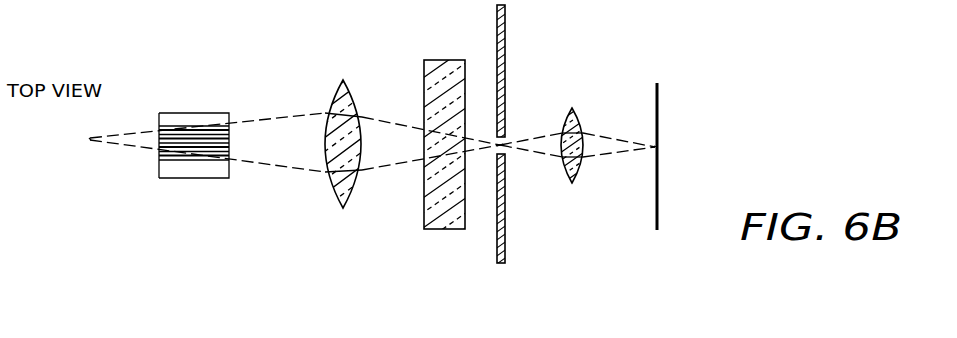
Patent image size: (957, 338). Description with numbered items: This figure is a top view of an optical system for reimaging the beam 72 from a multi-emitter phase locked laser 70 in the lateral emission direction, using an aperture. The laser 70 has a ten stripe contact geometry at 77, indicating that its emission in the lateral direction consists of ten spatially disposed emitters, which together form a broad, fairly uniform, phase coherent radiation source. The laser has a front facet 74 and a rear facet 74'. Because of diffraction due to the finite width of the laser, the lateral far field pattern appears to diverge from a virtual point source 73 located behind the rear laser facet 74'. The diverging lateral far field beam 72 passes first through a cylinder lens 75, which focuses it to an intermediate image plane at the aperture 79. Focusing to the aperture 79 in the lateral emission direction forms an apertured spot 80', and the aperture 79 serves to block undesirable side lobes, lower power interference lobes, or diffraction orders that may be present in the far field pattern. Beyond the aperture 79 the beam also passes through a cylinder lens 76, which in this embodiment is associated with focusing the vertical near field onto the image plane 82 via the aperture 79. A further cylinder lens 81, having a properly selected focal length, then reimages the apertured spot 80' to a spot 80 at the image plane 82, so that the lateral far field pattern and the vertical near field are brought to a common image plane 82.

The multi-emitter phase locked laser 70 is at (171, 98).
The beam 72 is at (285, 118).
The virtual point source 73 is at (90, 139).
The laser front facet 74 is at (212, 167).
The rear laser facet 74' is at (138, 167).
The cylinder lens 75 is at (351, 96).
The cylinder lens 76 is at (443, 60).
The ten stripe contact geometry 77 is at (200, 112).
The aperture 79 is at (505, 137).
The spot 80 is at (630, 172).
The apertured spot 80' is at (475, 204).
The cylinder lens 81 is at (580, 120).
The image plane 82 is at (660, 105).